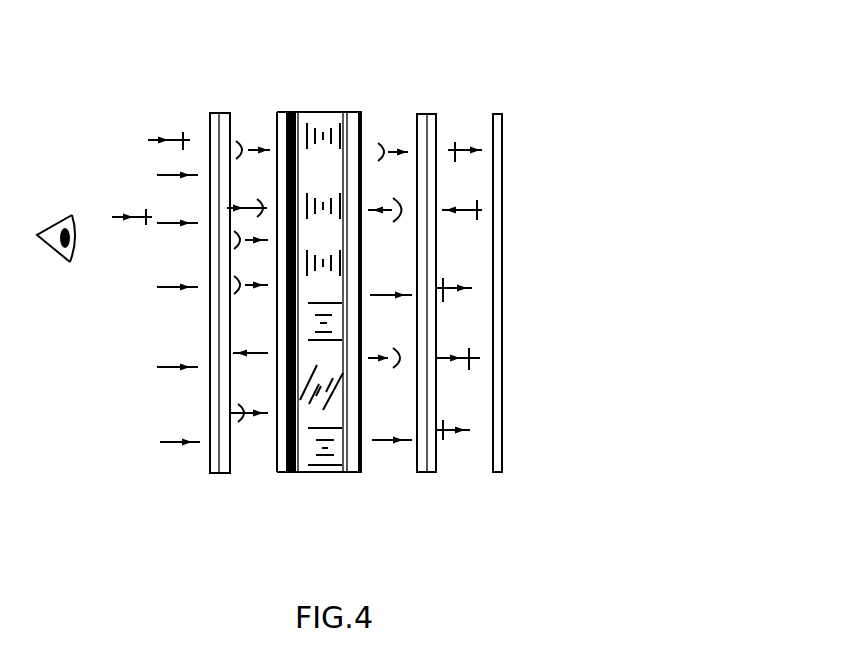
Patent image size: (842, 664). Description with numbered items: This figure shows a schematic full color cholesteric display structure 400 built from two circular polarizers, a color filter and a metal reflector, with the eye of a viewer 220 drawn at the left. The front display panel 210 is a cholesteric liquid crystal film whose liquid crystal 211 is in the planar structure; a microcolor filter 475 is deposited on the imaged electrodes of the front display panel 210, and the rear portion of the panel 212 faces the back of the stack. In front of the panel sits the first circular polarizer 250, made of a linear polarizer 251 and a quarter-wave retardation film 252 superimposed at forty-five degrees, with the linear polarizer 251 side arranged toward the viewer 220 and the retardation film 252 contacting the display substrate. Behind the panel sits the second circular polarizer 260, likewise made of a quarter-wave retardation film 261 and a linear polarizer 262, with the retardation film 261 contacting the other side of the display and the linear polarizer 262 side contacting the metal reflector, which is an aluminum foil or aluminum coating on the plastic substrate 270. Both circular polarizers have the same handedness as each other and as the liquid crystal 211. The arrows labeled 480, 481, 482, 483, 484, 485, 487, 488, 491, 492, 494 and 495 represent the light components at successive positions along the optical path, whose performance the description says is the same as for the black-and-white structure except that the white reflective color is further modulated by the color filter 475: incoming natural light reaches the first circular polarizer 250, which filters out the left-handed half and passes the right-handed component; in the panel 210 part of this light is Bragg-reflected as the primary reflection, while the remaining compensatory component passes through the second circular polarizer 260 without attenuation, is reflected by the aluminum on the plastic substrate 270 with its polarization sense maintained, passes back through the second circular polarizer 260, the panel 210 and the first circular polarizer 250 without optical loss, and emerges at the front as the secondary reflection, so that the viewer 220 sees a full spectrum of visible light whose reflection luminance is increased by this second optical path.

The display system 400 is at (58, 16).
The front display panel 210 is at (312, 108).
The liquid crystal 211 is at (324, 266).
The liquid crystal panel substrate 212 is at (312, 447).
The viewer eye 220 is at (58, 265).
The first circular polarizer 250 is at (217, 106).
The linear polarizer 251 is at (212, 488).
The quarter-wave retardation film 252 is at (228, 483).
The second circular polarizer 260 is at (427, 110).
The quarter-wave retardation film 261 is at (422, 477).
The linear polarizer 262 is at (433, 475).
The plastic substrate 270 is at (503, 100).
The microcolor filter 475 is at (297, 475).
The incident light 480 is at (172, 358).
The polarized light 481 is at (250, 147).
The polarized light 482 is at (395, 143).
The polarized light 483 is at (462, 139).
The reflected light 484 is at (462, 200).
The reflected light 485 is at (398, 188).
The reflected light 487 is at (138, 210).
The outgoing light 488 is at (167, 133).
The polarized light 491 is at (385, 285).
The polarized light 492 is at (455, 278).
The polarized light 494 is at (382, 348).
The reflected light 495 is at (248, 345).